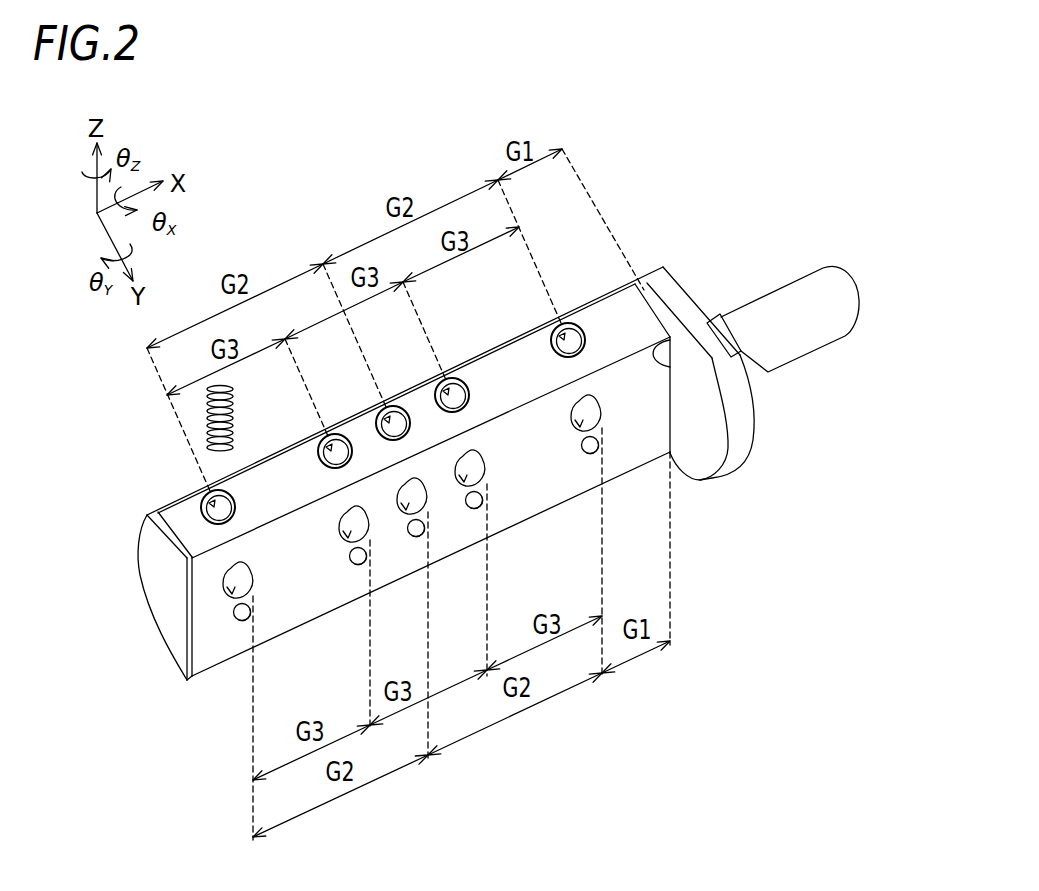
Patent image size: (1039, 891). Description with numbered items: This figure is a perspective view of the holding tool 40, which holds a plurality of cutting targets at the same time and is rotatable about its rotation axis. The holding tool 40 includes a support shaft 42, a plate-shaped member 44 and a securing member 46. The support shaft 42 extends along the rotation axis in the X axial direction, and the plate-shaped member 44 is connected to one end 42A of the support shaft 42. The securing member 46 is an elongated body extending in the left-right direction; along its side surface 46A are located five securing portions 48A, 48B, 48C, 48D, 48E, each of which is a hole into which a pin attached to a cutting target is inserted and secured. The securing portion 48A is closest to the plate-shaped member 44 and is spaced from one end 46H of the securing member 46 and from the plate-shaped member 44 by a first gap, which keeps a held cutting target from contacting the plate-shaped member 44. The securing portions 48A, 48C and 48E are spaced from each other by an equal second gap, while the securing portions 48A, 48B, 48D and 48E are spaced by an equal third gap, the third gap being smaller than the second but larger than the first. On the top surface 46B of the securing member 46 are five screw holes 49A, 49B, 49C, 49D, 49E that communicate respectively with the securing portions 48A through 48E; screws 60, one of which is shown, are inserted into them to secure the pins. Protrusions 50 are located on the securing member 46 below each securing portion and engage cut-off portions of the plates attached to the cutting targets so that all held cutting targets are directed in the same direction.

The holding tool 40 is at (668, 184).
The support shaft 42 is at (800, 290).
The one end of the support shaft 42A is at (718, 320).
The plate-shaped member 44 is at (747, 423).
The securing member 46 is at (386, 453).
The side surface of the securing member 46A is at (652, 435).
The top surface of the securing member 46B is at (192, 533).
The one end of the securing member 46H is at (652, 340).
The securing portion 48A is at (575, 431).
The securing portion 48B is at (459, 486).
The securing portion 48C is at (400, 514).
The securing portion 48D is at (343, 542).
The securing portion 48E is at (227, 598).
The screw hole 49A is at (550, 330).
The screw hole 49B is at (437, 388).
The screw hole 49C is at (383, 412).
The screw hole 49D is at (320, 445).
The screw hole 49E is at (197, 494).
The protrusion 50 is at (243, 622).
The screw 60 is at (205, 395).